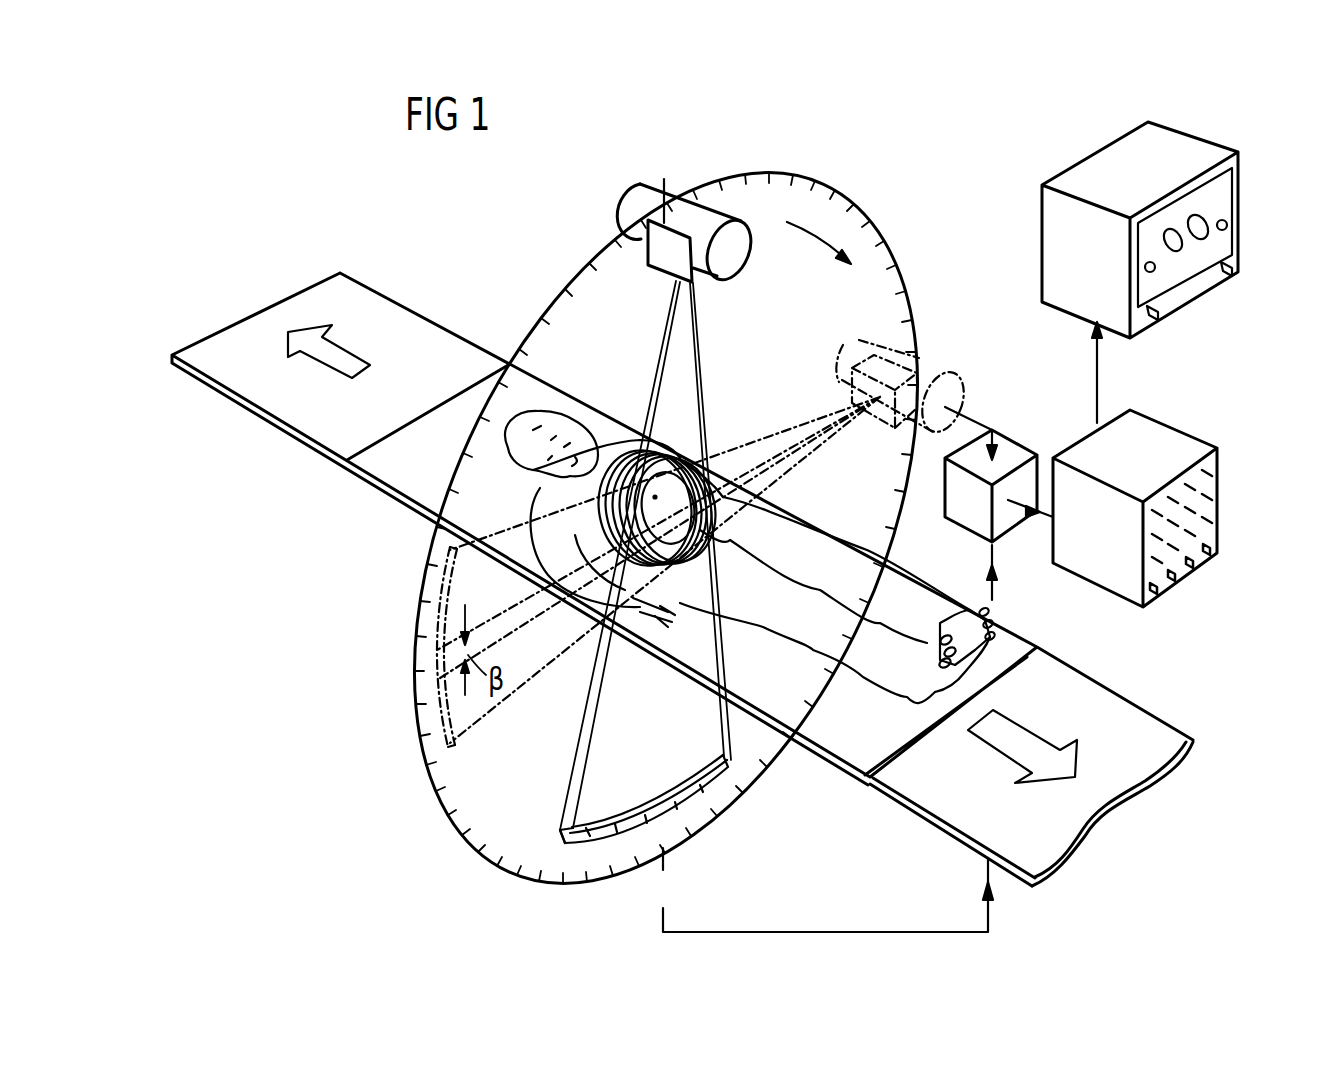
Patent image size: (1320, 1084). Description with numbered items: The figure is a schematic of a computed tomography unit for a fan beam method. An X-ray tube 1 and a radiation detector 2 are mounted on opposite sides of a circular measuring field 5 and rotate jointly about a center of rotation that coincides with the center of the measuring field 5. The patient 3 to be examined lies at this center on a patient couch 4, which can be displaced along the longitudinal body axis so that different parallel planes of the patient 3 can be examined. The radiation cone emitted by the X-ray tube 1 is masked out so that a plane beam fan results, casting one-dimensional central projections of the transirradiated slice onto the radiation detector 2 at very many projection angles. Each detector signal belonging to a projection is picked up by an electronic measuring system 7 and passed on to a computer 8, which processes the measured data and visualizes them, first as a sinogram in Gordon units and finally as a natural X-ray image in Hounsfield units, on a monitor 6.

The X-ray tube 1 is at (748, 258).
The radiation detector 2 is at (598, 826).
The patient 3 is at (550, 410).
The patient couch 4 is at (232, 333).
The circular measuring field 5 is at (868, 212).
The monitor 6 is at (1183, 145).
The electronic measuring system 7 is at (1012, 450).
The computer 8 is at (1158, 438).